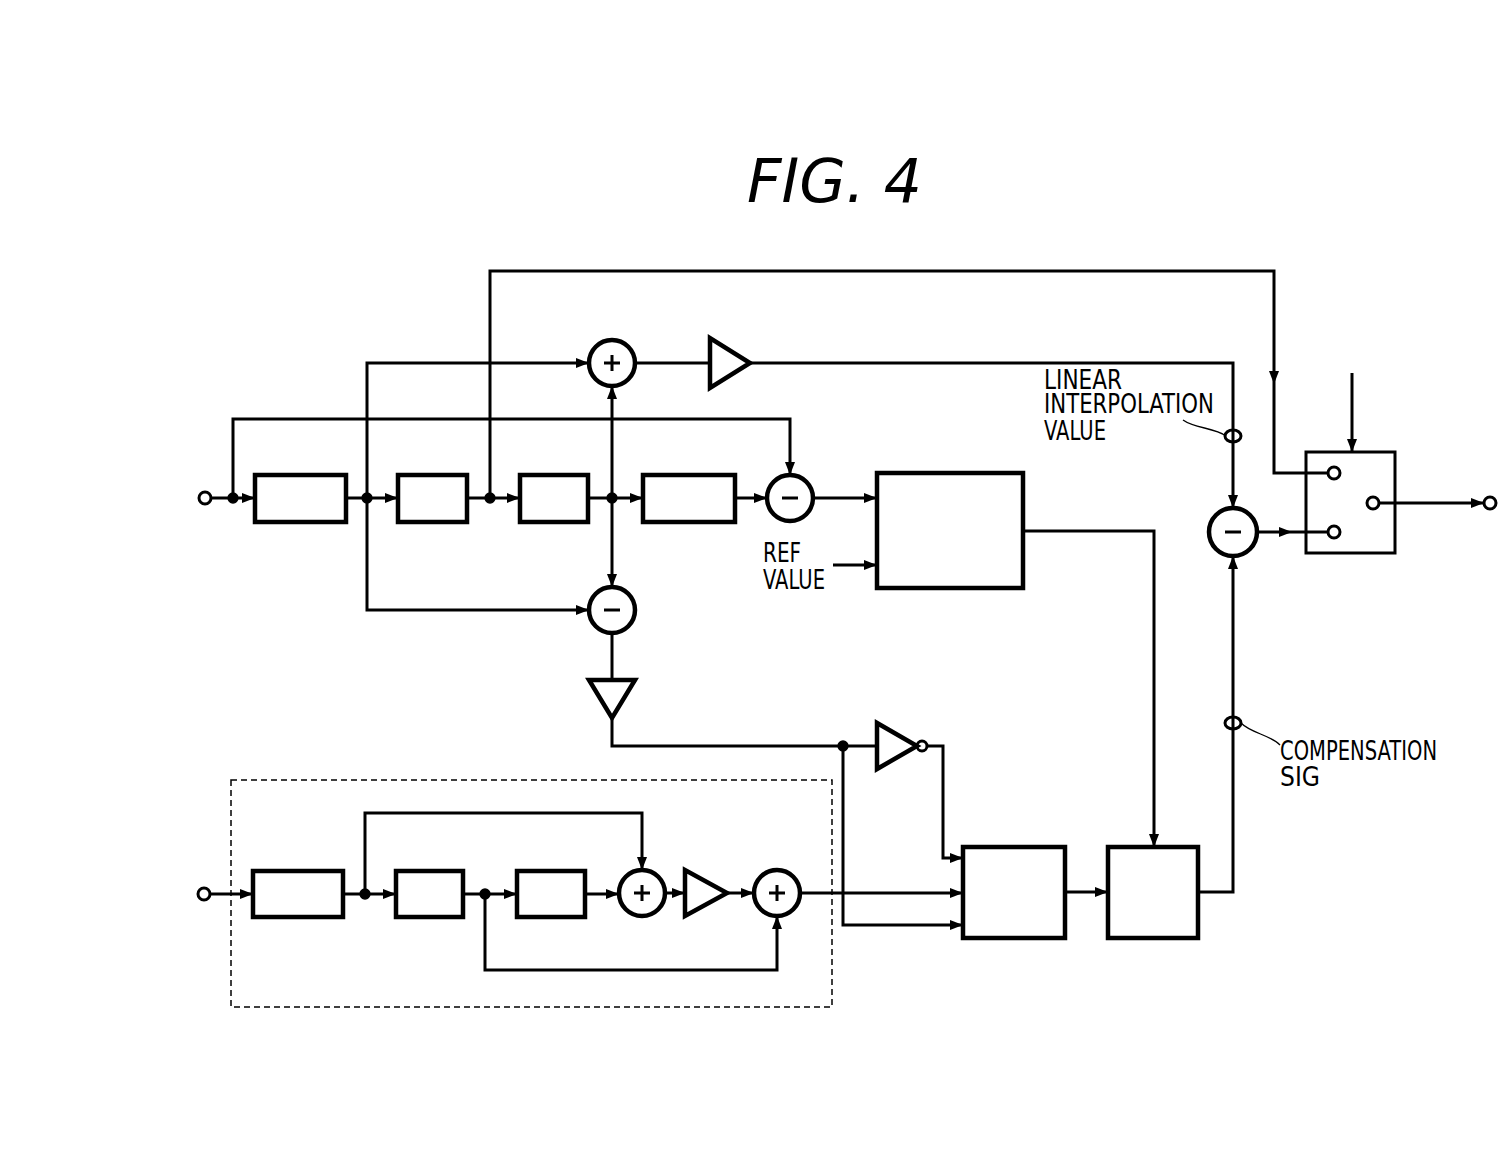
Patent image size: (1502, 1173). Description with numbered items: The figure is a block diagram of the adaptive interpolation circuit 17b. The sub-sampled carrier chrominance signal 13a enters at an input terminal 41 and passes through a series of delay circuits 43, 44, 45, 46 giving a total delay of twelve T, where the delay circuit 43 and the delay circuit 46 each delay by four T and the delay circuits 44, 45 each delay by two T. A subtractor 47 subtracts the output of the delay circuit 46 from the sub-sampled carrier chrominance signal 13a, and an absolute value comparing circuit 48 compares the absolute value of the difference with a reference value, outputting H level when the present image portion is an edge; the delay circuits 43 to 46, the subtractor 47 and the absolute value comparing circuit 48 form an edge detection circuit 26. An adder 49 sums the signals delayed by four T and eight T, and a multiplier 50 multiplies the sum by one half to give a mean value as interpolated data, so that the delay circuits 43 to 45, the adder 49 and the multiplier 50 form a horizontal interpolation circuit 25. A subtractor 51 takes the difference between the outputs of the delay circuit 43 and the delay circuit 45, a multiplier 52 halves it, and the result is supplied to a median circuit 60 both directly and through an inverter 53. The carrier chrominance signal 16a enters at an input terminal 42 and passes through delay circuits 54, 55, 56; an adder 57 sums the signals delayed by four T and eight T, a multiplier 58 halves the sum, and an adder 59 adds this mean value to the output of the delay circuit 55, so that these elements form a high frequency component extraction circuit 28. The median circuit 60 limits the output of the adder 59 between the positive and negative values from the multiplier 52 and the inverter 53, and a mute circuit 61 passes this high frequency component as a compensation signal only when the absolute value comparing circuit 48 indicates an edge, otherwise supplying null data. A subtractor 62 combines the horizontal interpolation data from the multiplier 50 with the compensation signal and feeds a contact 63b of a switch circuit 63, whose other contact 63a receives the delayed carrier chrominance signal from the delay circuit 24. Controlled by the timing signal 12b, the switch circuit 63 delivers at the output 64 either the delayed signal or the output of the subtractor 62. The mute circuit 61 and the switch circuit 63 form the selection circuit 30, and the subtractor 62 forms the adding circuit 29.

The timing signal 12b is at (1355, 380).
The sub-sampled carrier chrominance signal 13a is at (213, 505).
The carrier chrominance signal 16a is at (210, 900).
The adaptive interpolation circuit 17b is at (1057, 236).
The delay circuit 24 is at (425, 316).
The horizontal interpolation circuit 25 is at (823, 329).
The edge detection circuit 26 is at (991, 452).
The high frequency component extraction circuit 28 is at (273, 779).
The adding circuit 29 is at (1027, 974).
The selection circuit 30 is at (1357, 470).
The first input terminal 41 is at (202, 490).
The input terminal 42 is at (200, 888).
The delay circuit 43 is at (307, 473).
The delay circuit 44 is at (433, 473).
The delay circuit 45 is at (555, 473).
The delay circuit 46 is at (700, 473).
The subtractor 47 is at (813, 478).
The absolute value comparing circuit 48 is at (940, 473).
The adder 49 is at (620, 345).
The multiplier 50 is at (745, 350).
The subtractor 51 is at (632, 592).
The multiplier 52 is at (627, 682).
The inverter 53 is at (900, 730).
The delay circuit 54 is at (315, 870).
The delay circuit 55 is at (440, 870).
The delay circuit 56 is at (562, 870).
The adder 57 is at (620, 914).
The multiplier 58 is at (715, 880).
The adder 59 is at (783, 872).
The median circuit 60 is at (1030, 845).
The mute circuit 61 is at (1198, 908).
The subtractor 62 is at (1210, 525).
The switch circuit 63 is at (1360, 560).
The switch first contact 63a is at (1330, 467).
The contact 63b is at (1330, 540).
The output 64 is at (1488, 497).